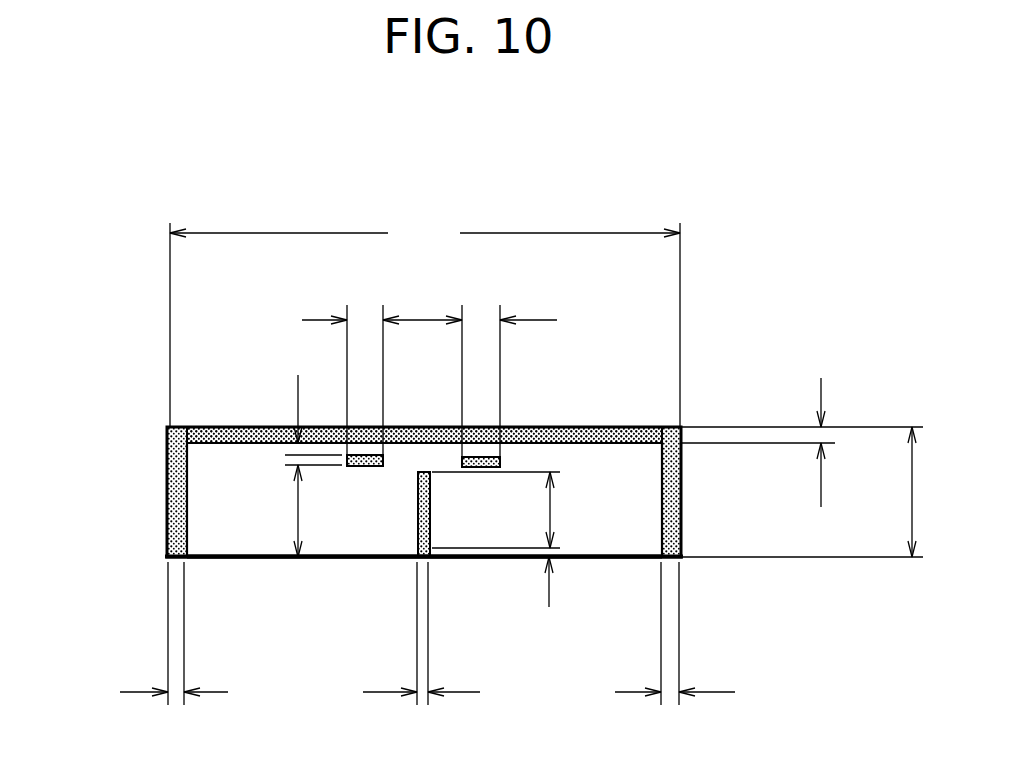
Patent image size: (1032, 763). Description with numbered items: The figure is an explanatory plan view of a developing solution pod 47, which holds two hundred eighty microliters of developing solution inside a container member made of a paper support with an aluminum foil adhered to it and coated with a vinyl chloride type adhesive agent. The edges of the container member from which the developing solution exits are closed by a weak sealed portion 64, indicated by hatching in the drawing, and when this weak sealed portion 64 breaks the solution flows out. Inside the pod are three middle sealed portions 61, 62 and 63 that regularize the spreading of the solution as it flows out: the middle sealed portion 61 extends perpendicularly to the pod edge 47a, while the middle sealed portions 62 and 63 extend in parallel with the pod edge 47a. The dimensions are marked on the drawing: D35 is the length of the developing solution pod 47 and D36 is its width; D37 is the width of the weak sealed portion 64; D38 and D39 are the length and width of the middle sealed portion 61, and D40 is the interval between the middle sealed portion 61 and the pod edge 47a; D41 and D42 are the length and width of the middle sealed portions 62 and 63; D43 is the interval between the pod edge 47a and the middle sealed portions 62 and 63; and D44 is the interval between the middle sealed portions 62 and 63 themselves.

The developing solution pod 47 is at (313, 586).
The pod edge 47a is at (228, 560).
The middle sealed portion 61 is at (418, 525).
The middle sealed portion 62 is at (363, 468).
The middle sealed portion 63 is at (482, 469).
The weak sealed portion 64 is at (576, 427).
The length of the developing solution pod D35 is at (425, 320).
The width of the developing solution pod D36 is at (909, 492).
The width of the weak sealed portion D37 is at (489, 545).
The length of the middle sealed portion D38 is at (527, 510).
The width of the middle sealed portion D39 is at (455, 637).
The interval between the middle sealed portion and the pod edge D40 is at (546, 605).
The length of the middle sealed portions D41 is at (430, 378).
The width of the middle sealed portions D42 is at (296, 389).
The interval between the pod edge and the middle sealed portions D43 is at (284, 506).
The interval between the middle sealed portions D44 is at (422, 298).